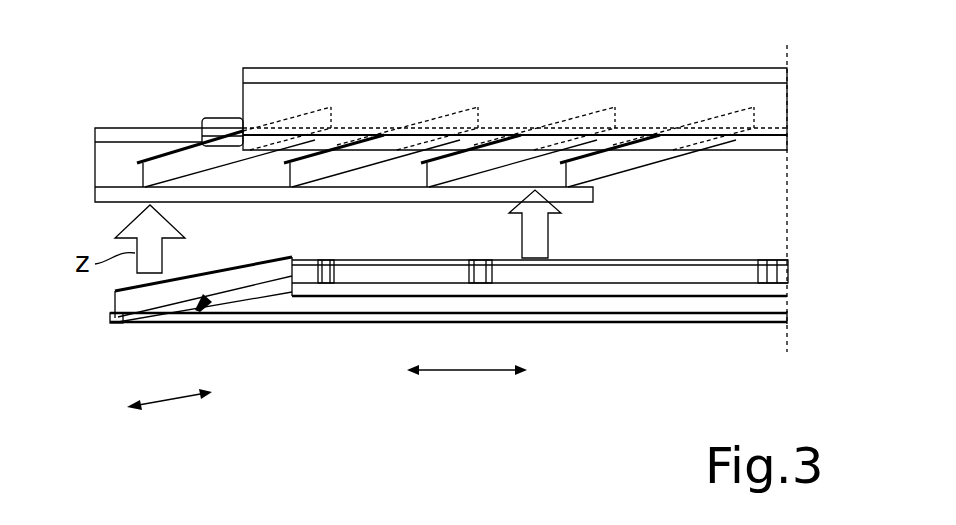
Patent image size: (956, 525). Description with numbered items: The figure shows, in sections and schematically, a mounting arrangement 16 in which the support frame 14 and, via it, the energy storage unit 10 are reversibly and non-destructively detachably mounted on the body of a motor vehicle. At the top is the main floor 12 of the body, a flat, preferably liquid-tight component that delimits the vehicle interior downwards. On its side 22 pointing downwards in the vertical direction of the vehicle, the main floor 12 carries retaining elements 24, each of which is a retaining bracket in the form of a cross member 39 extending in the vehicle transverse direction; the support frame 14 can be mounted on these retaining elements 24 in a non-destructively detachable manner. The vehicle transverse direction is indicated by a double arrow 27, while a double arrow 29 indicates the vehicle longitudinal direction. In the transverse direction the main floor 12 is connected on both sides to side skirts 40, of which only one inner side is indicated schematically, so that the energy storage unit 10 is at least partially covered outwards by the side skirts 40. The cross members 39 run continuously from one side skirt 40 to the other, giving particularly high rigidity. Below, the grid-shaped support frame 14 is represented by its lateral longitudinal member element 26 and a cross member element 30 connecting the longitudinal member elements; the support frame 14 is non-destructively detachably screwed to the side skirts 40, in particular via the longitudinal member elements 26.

The energy storage unit 10 is at (799, 327).
The main floor 12 is at (198, 115).
The support frame 14 is at (797, 299).
The mounting arrangement 16 is at (760, 359).
The side of the main floor 22 is at (266, 168).
The retaining element 24 is at (445, 187).
The cross member 39 is at (231, 158).
The lateral longitudinal member element 26 is at (115, 328).
The double arrow 27 is at (170, 400).
The double arrow 29 is at (468, 372).
The cross member element 30 is at (267, 322).
The side skirt 40 is at (400, 83).